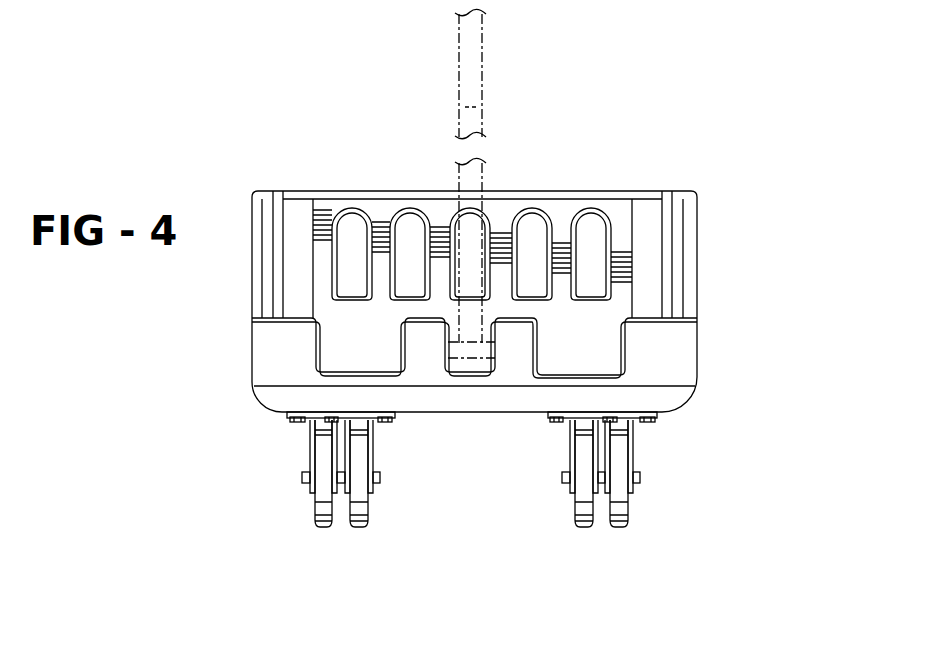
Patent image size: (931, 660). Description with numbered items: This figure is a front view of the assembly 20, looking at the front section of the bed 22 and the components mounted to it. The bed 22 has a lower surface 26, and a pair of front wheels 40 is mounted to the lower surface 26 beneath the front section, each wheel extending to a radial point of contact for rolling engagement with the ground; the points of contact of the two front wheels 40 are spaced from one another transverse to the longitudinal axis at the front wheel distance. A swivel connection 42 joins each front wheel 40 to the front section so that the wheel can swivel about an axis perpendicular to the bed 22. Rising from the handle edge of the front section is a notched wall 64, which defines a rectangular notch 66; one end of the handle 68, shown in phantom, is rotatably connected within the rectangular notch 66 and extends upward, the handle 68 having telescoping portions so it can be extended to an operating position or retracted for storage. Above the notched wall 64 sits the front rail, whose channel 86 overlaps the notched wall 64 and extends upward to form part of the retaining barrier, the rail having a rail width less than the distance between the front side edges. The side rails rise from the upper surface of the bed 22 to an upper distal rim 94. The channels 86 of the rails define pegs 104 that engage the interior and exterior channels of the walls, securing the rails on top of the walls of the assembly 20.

The assembly 20 is at (620, 101).
The bed 22 is at (255, 397).
The lower surface 26 is at (500, 412).
The front wheels 40 is at (644, 473).
The swivel connection 42 is at (375, 420).
The notched wall 64 is at (512, 343).
The rectangular notch 66 is at (472, 358).
The handle 68 is at (482, 60).
The channel 86 is at (362, 372).
The upper distal rim 94 is at (680, 191).
The pegs 104 is at (338, 342).